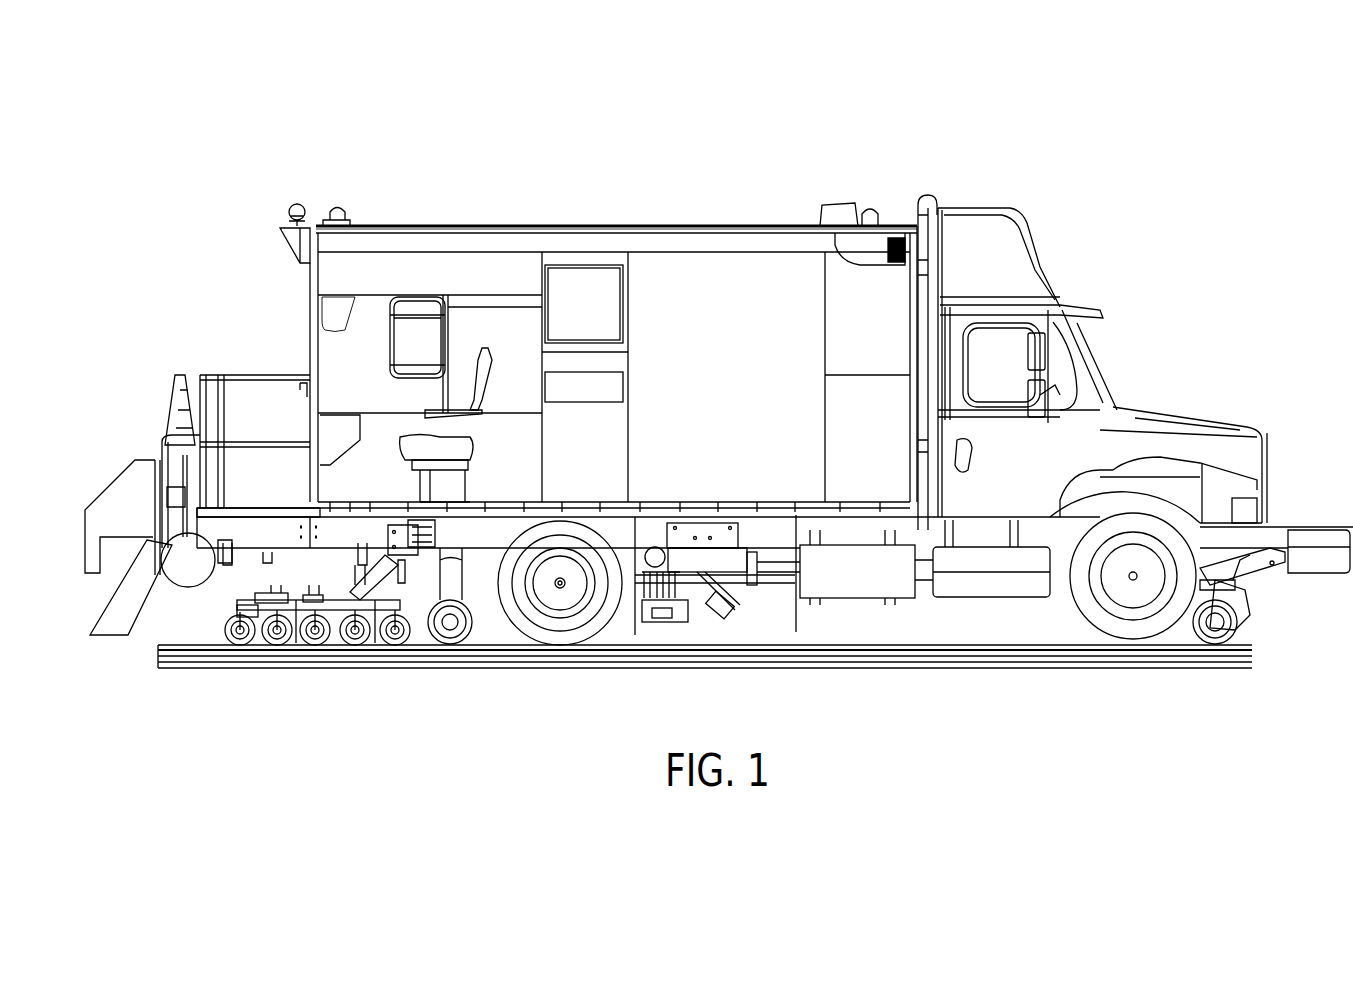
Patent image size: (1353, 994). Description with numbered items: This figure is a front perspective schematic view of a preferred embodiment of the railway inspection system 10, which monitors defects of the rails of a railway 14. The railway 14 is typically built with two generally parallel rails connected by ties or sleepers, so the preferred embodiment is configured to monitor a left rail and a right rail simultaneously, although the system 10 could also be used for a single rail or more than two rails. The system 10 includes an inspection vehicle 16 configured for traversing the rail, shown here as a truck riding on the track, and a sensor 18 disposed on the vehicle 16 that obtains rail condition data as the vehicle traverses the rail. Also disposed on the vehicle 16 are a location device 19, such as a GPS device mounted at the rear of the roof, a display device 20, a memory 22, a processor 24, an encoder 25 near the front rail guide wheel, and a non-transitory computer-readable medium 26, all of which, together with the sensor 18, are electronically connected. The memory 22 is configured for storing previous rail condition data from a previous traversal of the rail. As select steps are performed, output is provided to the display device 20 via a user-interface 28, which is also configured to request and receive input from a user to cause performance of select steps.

The railway inspection system 10 is at (1183, 176).
The railway 14 is at (160, 655).
The inspection vehicle 16 is at (1107, 410).
The sensor 18 is at (360, 640).
The location device 19 is at (296, 204).
The display device 20 is at (422, 345).
The memory 22 is at (605, 292).
The processor 24 is at (605, 388).
The encoder 25 is at (1235, 620).
The non-transitory computer-readable medium 26 is at (605, 328).
The user-interface 28 is at (405, 330).